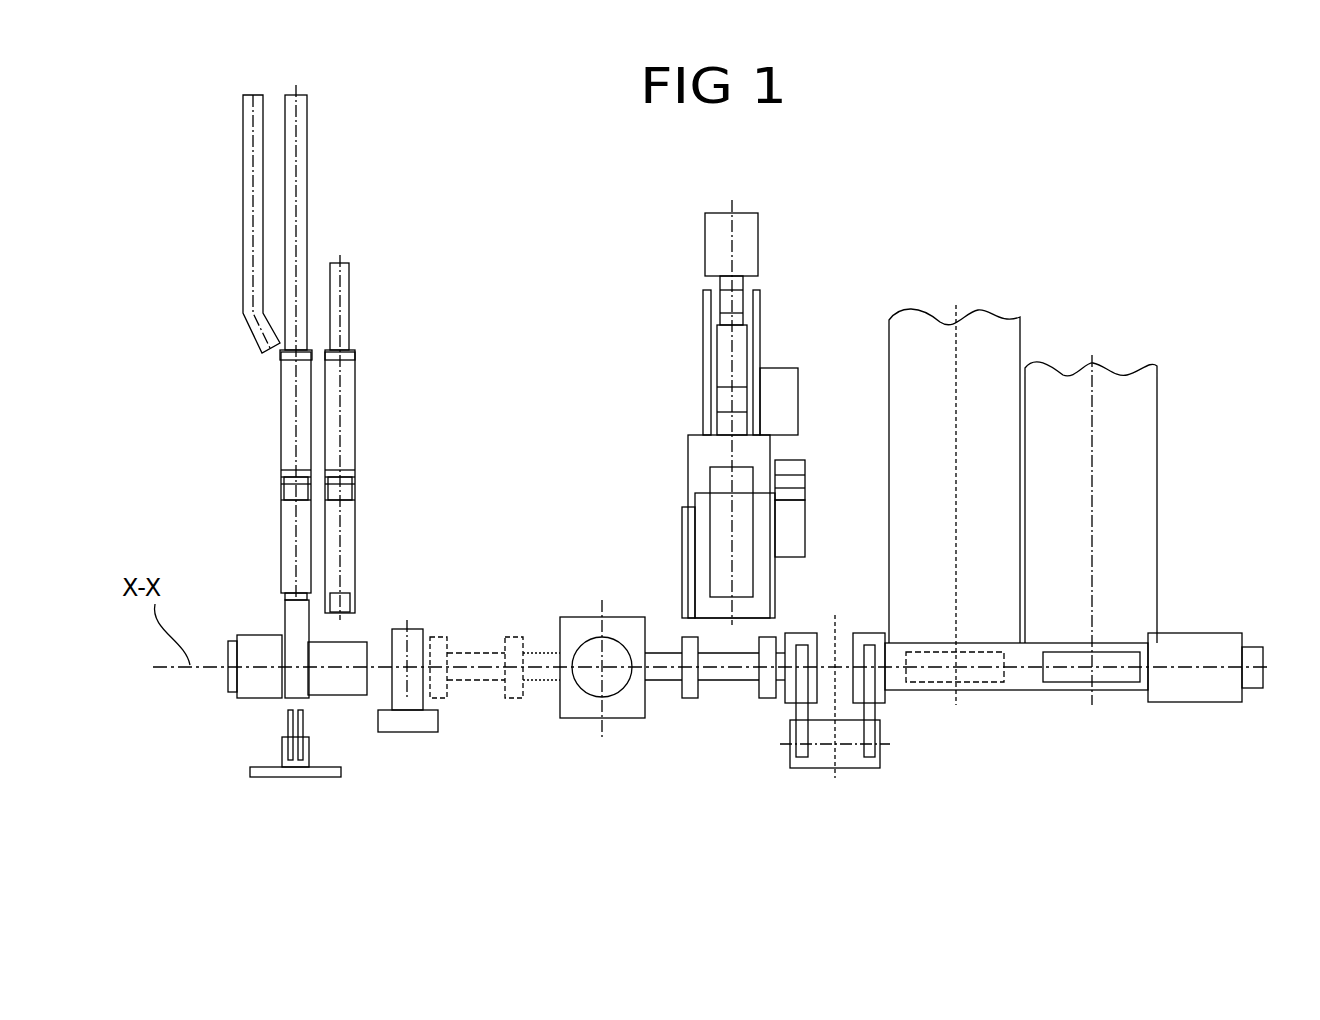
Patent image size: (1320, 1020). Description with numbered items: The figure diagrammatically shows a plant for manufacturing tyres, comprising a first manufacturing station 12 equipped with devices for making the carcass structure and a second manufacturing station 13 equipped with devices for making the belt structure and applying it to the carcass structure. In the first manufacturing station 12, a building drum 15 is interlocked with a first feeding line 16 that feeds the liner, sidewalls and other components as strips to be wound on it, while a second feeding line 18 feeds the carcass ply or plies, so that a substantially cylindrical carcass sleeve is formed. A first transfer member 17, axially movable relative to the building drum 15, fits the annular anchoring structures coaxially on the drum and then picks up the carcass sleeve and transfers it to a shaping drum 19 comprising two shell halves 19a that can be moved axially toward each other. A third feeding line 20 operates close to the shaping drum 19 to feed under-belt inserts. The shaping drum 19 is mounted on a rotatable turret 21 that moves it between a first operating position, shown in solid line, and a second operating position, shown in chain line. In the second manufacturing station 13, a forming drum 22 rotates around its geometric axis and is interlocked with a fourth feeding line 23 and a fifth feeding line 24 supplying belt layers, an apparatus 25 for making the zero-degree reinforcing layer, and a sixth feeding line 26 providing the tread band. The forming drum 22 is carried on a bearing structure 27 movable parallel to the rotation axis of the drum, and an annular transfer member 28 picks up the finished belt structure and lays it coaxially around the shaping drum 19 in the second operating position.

The first manufacturing station 12 is at (1157, 291).
The second manufacturing station 13 is at (403, 438).
The building drum 15 is at (972, 675).
The first feeding line 16 is at (1143, 466).
The first transfer member 17 is at (850, 760).
The second feeding line 18 is at (1000, 342).
The shaping drum 19 is at (484, 684).
The shell halves 19a is at (688, 692).
The third feeding line 20 is at (708, 543).
The rotatable turret 21 is at (590, 688).
The forming drum 22 is at (290, 697).
The fourth feeding line 23 is at (298, 195).
The fifth feeding line 24 is at (246, 237).
The apparatus for making the zero-degree layer 25 is at (313, 778).
The sixth feeding line 26 is at (345, 525).
The bearing structure 27 is at (258, 700).
The annular transfer member 28 is at (408, 645).